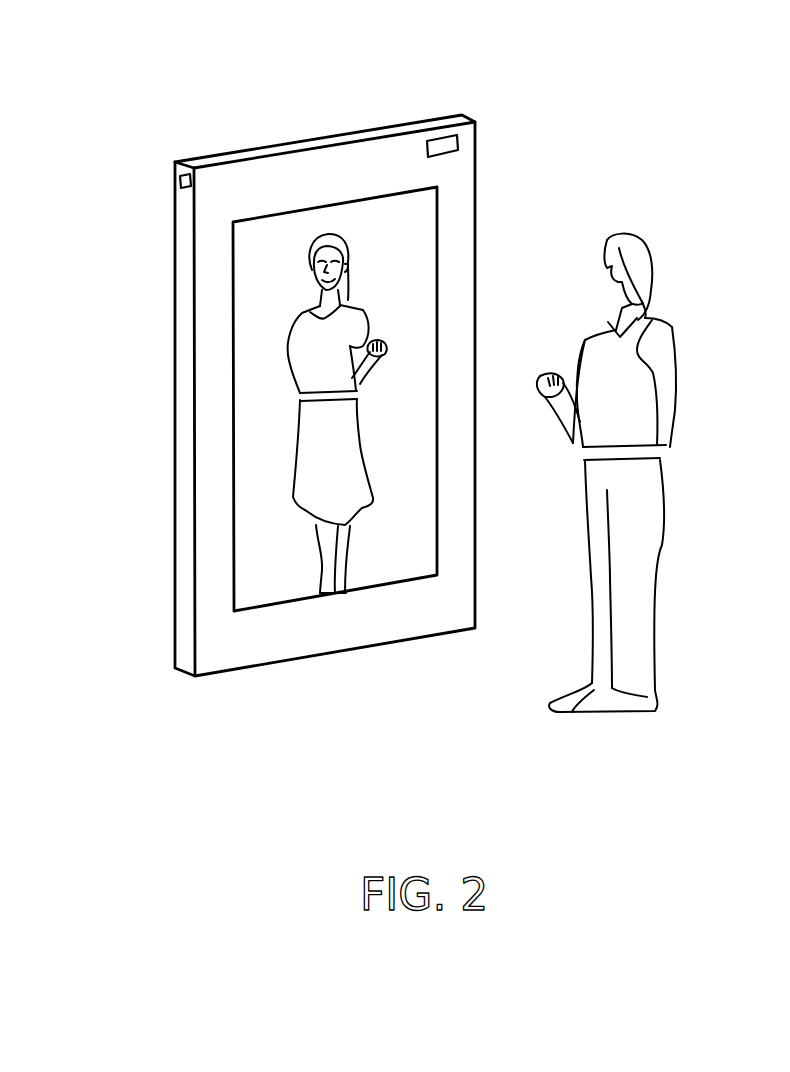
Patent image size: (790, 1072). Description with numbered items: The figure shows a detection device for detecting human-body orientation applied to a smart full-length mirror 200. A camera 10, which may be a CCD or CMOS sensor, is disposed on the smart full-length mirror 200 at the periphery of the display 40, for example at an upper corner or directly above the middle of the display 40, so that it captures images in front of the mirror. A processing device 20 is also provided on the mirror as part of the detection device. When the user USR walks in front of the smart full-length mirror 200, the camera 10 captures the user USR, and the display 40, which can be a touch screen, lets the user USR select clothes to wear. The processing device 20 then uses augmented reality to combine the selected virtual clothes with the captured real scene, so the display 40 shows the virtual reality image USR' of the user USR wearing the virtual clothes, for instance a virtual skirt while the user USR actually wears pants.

The smart full-length mirror 200 is at (182, 328).
The camera 10 is at (437, 136).
The processing device 20 is at (178, 182).
The display 40 is at (253, 478).
The user USR is at (606, 429).
The virtual reality image USR' is at (335, 309).